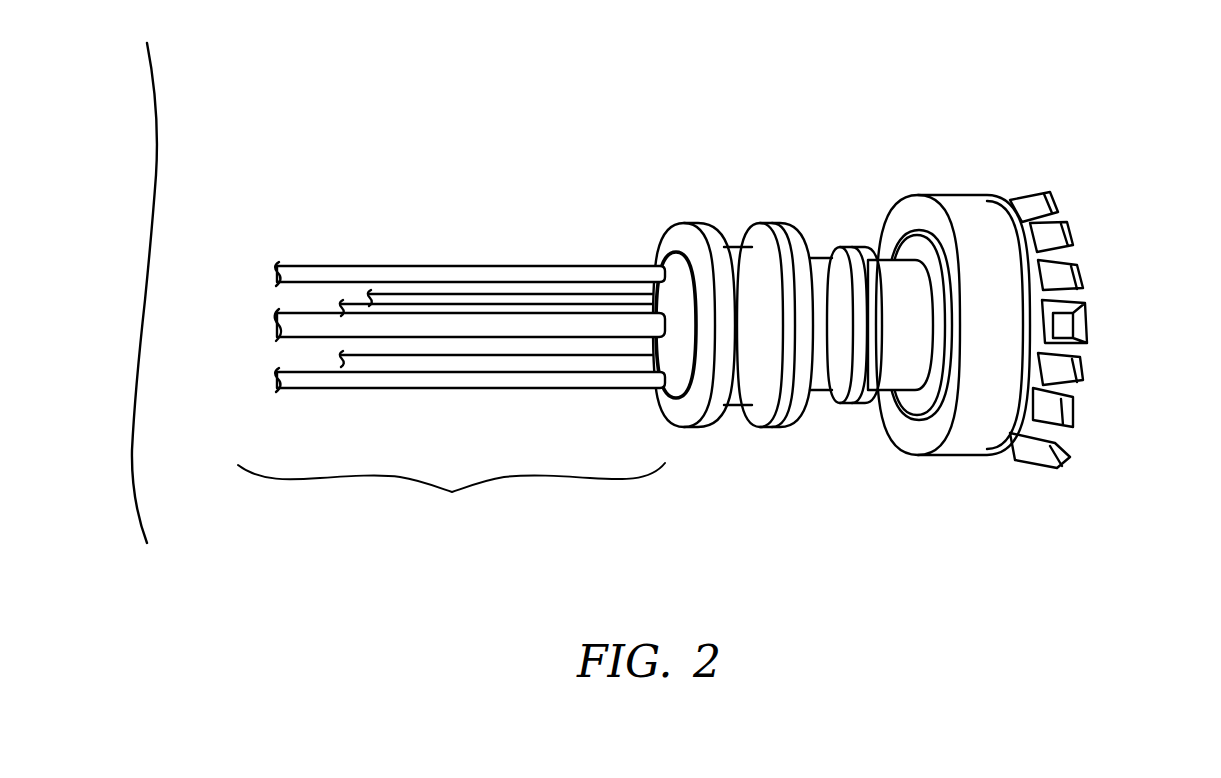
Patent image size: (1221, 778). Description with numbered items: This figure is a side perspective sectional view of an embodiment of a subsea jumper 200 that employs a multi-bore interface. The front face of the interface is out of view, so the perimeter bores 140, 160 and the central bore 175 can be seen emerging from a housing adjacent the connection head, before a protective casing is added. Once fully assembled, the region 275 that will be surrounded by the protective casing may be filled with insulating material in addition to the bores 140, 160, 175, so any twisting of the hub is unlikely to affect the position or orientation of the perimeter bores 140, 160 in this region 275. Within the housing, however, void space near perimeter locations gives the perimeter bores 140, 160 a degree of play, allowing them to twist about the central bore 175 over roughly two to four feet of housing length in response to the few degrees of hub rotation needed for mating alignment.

The perimeter bore 140 is at (406, 295).
The perimeter bore 160 is at (548, 273).
The central bore 175 is at (402, 325).
The subsea jumper 200 is at (358, 105).
The region 275 is at (451, 499).